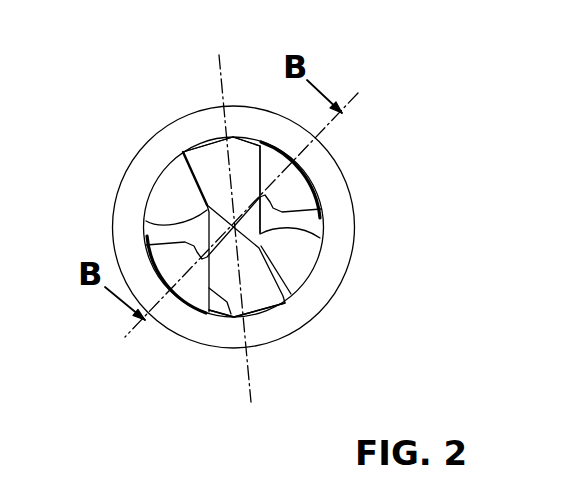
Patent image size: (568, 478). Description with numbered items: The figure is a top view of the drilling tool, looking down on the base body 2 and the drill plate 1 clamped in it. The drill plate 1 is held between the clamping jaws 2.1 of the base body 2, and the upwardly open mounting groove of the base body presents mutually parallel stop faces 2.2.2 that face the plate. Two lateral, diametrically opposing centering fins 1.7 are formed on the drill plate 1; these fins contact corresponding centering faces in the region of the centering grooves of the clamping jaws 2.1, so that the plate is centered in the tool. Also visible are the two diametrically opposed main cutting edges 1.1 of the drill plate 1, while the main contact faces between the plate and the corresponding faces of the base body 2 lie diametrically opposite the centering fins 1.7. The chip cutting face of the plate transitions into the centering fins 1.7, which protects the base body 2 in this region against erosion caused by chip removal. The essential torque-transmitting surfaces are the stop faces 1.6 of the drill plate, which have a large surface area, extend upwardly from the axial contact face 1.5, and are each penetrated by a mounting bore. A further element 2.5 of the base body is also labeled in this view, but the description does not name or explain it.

The drill plate 1 is at (208, 160).
The main cutting edges 1.1 is at (205, 207).
The axial contact face 1.5 is at (24, 469).
The stop faces 1.6 is at (260, 168).
The centering fins 1.7 is at (207, 209).
The base body 2 is at (138, 255).
The clamping jaws 2.1 is at (263, 188).
The stop faces 2.2.2 is at (280, 230).
The flute / chip groove 2.5 is at (293, 257).